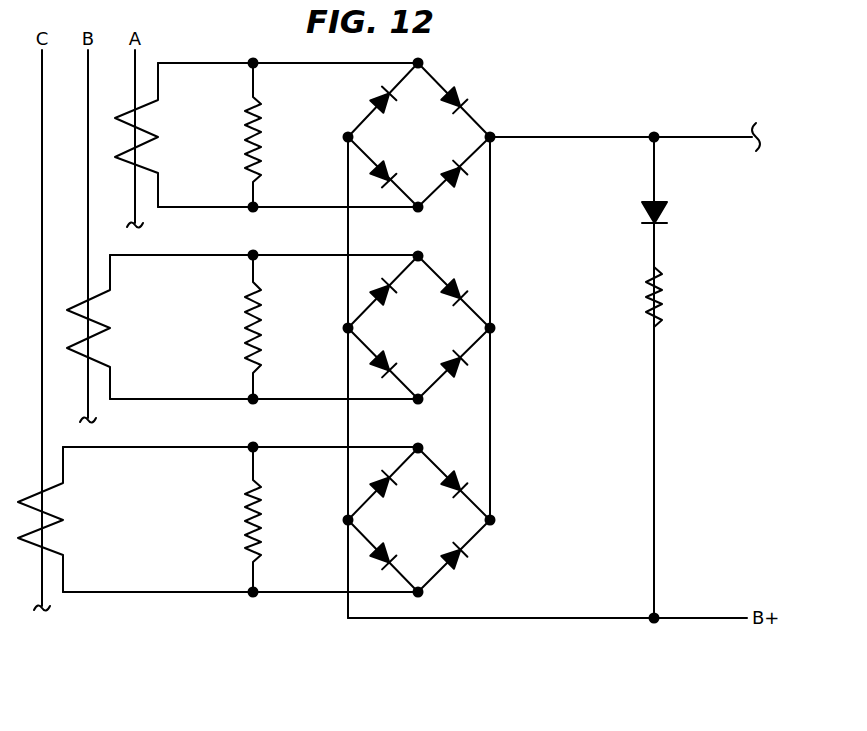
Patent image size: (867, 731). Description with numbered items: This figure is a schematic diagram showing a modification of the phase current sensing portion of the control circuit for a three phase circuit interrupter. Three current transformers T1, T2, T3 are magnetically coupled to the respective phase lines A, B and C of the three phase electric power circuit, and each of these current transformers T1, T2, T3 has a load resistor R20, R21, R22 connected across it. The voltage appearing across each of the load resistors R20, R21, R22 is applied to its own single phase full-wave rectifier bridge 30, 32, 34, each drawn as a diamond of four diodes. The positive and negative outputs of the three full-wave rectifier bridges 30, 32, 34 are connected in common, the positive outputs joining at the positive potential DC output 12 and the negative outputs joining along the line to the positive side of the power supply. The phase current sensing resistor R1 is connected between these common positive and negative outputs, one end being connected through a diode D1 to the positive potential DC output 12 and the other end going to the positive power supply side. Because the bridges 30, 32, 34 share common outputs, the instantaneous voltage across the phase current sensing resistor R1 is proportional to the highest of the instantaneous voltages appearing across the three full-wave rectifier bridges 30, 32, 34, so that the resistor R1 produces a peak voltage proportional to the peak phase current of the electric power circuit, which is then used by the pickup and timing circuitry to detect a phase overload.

The positive potential DC output 12 is at (625, 129).
The single phase full-wave rectifier bridge 30 is at (409, 149).
The single phase full-wave rectifier bridge 32 is at (408, 341).
The single phase full-wave rectifier bridge 34 is at (405, 531).
The current transformer T1 is at (151, 135).
The current transformer T2 is at (105, 327).
The current transformer T3 is at (55, 519).
The load resistor R20 is at (274, 135).
The load resistor R21 is at (275, 327).
The load resistor R22 is at (274, 519).
The diode D1 is at (669, 212).
The phase current sensing resistor R1 is at (671, 297).